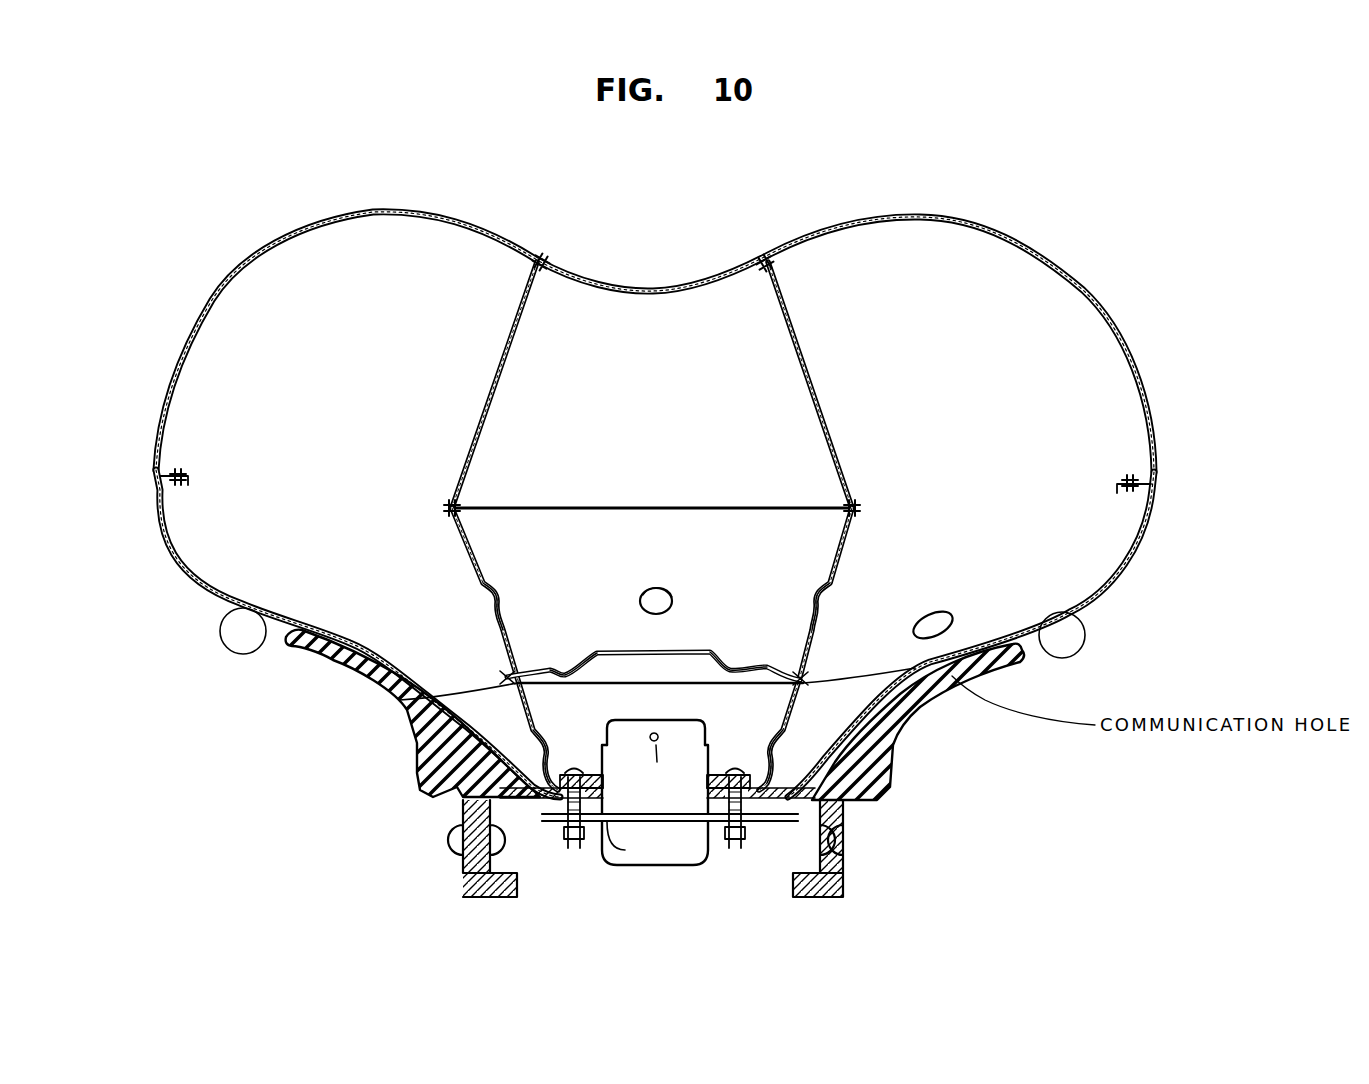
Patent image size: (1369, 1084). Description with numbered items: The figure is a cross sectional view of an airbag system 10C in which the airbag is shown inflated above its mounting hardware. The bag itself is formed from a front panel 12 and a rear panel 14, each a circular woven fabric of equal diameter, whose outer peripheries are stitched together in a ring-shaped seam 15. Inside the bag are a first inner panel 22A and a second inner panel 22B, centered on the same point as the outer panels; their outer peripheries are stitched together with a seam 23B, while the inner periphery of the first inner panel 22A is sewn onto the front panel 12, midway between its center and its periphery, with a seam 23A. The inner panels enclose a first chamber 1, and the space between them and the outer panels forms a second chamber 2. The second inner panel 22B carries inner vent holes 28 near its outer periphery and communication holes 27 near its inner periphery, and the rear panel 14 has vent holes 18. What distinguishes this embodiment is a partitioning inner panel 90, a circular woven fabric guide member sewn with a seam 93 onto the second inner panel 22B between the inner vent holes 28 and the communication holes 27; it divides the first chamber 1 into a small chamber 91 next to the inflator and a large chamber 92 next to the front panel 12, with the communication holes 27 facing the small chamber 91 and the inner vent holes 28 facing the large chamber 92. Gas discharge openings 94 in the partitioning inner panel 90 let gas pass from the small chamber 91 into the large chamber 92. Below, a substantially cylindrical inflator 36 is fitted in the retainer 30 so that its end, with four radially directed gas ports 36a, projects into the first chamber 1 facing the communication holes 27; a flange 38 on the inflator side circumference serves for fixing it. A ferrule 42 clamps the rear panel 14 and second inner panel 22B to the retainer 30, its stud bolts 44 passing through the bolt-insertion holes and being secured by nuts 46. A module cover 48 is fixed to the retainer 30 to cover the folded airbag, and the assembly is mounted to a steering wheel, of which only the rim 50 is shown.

The first chamber 1 is at (650, 273).
The second chamber 2 is at (296, 492).
The airbag system 10C is at (1075, 248).
The front panel 12 is at (1124, 332).
The rear panel 14 is at (1122, 570).
The seam 15 is at (182, 484).
The vent holes 18 is at (946, 617).
The first inner panel 22A is at (514, 356).
The second inner panel 22B is at (478, 545).
The seam 23A is at (541, 257).
The seam 23B is at (448, 512).
The communication holes 27 is at (526, 740).
The inner vent holes 28 is at (490, 600).
The retainer 30 is at (836, 810).
The inflator 36 is at (665, 858).
The gas ports 36a is at (683, 748).
The flange 38 is at (610, 830).
The ferrule 42 is at (716, 773).
The stud bolts 44 is at (576, 856).
The nuts 46 is at (561, 845).
The module cover 48 is at (337, 676).
The rim 50 is at (250, 655).
The partitioning inner panel 90 is at (400, 700).
The small chamber 91 is at (663, 691).
The large chamber 92 is at (652, 471).
The seam 93 is at (514, 672).
The gas discharge openings 94 is at (580, 667).